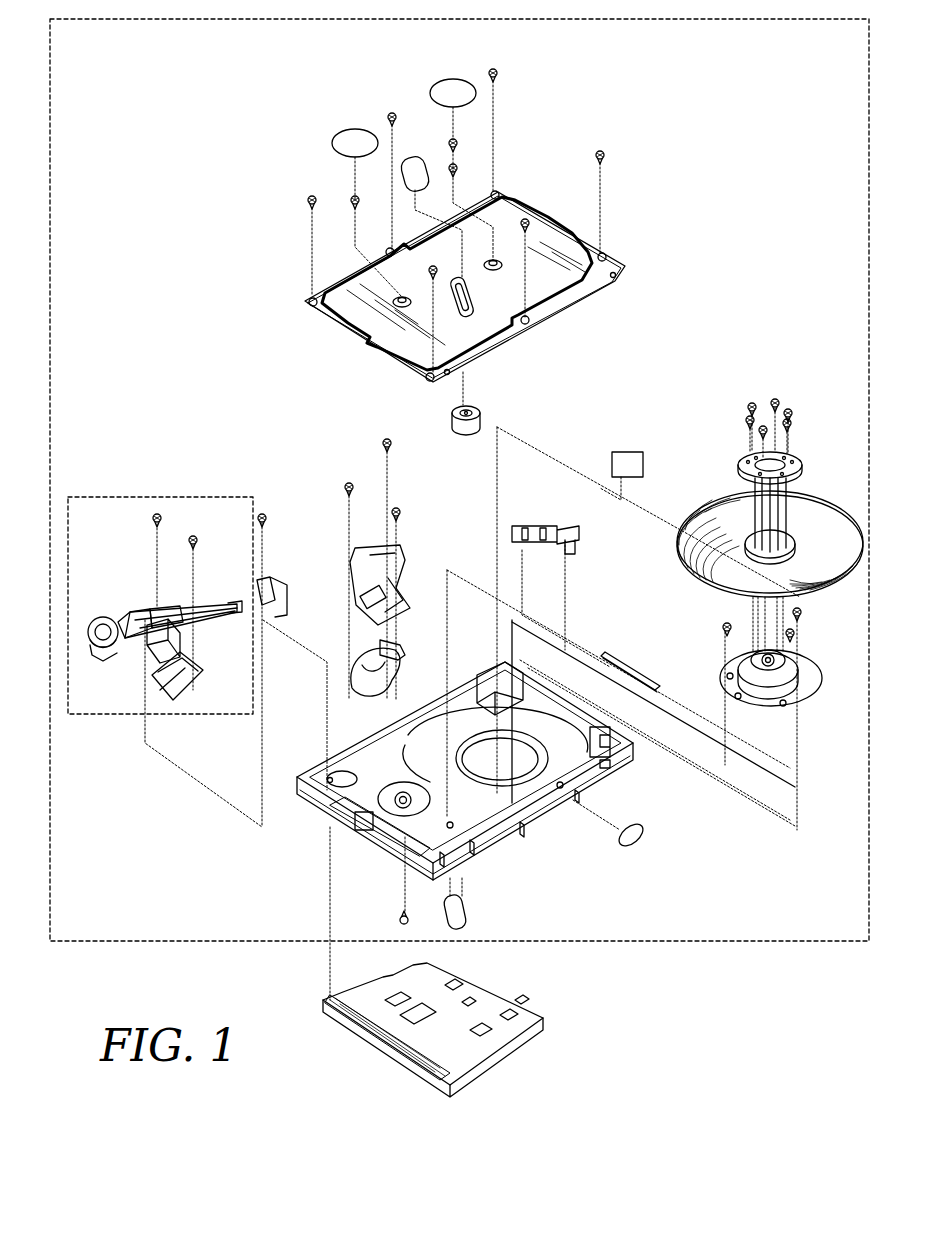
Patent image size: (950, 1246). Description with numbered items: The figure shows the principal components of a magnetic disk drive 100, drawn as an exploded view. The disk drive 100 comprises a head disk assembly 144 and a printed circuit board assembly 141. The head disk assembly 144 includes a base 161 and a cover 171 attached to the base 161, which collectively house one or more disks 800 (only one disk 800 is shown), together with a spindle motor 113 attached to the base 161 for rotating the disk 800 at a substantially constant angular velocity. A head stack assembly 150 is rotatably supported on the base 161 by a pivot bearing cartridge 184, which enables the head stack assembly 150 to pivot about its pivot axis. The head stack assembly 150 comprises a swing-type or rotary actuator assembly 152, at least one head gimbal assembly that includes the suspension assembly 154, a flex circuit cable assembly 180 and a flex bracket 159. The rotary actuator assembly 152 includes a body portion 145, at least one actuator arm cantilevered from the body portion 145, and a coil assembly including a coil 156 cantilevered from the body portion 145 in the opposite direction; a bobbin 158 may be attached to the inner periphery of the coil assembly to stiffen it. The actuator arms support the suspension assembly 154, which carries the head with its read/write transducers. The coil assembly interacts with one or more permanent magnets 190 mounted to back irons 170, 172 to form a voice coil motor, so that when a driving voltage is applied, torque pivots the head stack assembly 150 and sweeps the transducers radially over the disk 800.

The magnetic disk drive 100 is at (722, 967).
The spindle motor 113 is at (710, 657).
The printed circuit board assembly 141 is at (492, 1058).
The head disk assembly 144 is at (620, 943).
The body portion 145 is at (150, 610).
The head stack assembly 150 is at (124, 497).
The rotary actuator assembly 152 is at (172, 600).
The suspension assembly 154 is at (235, 603).
The coil 156 is at (97, 650).
The bobbin 158 is at (112, 627).
The flex bracket 159 is at (203, 678).
The base 161 is at (520, 845).
The back iron 170 is at (352, 583).
The cover 171 is at (588, 289).
The back iron 172 is at (403, 660).
The flex circuit cable assembly 180 is at (183, 636).
The pivot bearing cartridge 184 is at (132, 608).
The permanent magnet 190 is at (350, 672).
The disk 800 is at (702, 508).